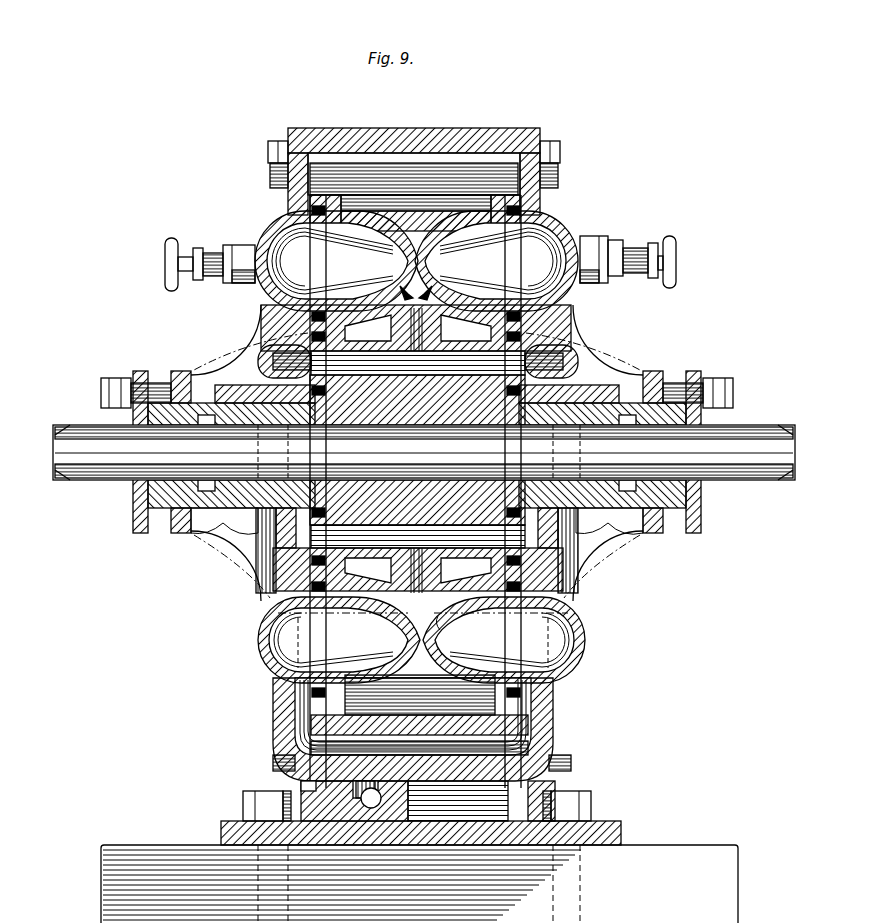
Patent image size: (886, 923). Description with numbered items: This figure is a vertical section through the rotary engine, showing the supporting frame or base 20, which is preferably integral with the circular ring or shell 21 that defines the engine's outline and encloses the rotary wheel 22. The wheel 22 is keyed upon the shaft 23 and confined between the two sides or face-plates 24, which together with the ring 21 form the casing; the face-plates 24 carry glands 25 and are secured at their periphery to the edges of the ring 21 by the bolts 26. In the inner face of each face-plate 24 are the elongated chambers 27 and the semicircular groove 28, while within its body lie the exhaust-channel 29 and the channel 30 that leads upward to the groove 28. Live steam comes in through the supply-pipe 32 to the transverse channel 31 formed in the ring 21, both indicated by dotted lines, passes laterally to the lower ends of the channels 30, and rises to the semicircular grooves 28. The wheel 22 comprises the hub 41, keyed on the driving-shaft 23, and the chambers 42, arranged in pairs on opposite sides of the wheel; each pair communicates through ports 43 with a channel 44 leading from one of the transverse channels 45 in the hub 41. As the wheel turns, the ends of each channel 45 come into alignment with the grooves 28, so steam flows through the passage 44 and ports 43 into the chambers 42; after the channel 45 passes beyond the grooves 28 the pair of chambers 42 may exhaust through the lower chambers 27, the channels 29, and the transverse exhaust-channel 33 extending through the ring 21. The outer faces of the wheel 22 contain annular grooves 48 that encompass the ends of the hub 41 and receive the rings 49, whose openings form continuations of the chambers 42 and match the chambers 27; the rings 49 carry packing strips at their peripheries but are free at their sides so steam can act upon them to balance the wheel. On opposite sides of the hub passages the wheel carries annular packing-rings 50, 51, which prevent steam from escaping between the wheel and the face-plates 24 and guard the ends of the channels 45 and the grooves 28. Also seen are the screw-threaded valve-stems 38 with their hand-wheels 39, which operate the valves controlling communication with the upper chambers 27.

The supporting frame or base 20 is at (614, 815).
The circular ring or shell 21 is at (412, 120).
The rotary wheel 22 is at (419, 715).
The shaft 23 is at (742, 470).
The sides or face-plates 24 is at (282, 188).
The glands 25 is at (417, 376).
The bolts 26 is at (266, 752).
The chambers 27 is at (586, 612).
The semicircular groove 28 is at (240, 353).
The exhaust-channel 29 is at (280, 706).
The channel 30 is at (248, 586).
The transverse channel 31 is at (423, 640).
The supply-pipe 32 is at (440, 612).
The transverse exhaust-channel 33 is at (510, 770).
The valve-stems 38 is at (178, 265).
The hand-wheels 39 is at (163, 236).
The hub 41 is at (417, 450).
The chambers 42 is at (420, 447).
The ports 43 is at (386, 286).
The channel or passage 44 is at (436, 325).
The transverse channels 45 is at (458, 527).
The annular grooves 48 is at (322, 130).
The rings 49 is at (262, 225).
The annular packing-ring 50 is at (246, 326).
The annular packing-ring 51 is at (252, 372).